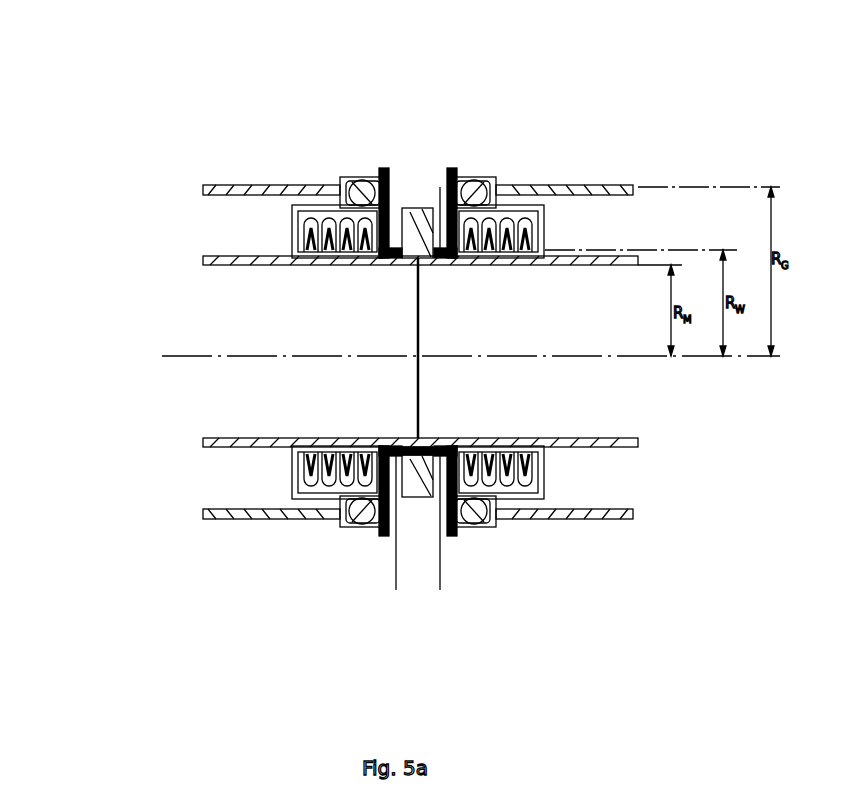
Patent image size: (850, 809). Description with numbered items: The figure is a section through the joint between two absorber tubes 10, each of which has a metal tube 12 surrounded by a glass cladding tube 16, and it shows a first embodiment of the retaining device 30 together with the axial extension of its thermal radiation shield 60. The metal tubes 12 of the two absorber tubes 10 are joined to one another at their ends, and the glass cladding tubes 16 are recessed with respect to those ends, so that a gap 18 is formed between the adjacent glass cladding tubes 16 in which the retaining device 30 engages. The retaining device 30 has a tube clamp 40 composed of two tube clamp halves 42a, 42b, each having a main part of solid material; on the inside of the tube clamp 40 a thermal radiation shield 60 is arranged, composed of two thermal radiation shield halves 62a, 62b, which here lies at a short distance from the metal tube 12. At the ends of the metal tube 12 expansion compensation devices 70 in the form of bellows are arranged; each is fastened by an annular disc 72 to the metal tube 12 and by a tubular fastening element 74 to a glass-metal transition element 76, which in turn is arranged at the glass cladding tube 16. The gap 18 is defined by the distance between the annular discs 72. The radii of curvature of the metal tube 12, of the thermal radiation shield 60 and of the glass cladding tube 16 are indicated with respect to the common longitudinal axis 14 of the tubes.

The absorber tube 10 is at (228, 121).
The metal tube 12 is at (242, 255).
The axis of rotation 14 is at (430, 337).
The glass cladding tube 16 is at (220, 183).
The gap 18 is at (437, 182).
The retaining device 30 is at (414, 595).
The tube clamp 40 is at (414, 82).
The tube clamp half 42a is at (412, 208).
The tube clamp half 42b is at (397, 548).
The thermal radiation shield 60 is at (487, 359).
The thermal radiation shield half 62a is at (440, 187).
The thermal radiation shield half 62b is at (440, 530).
The expansion compensation device 70 is at (325, 266).
The annular disc 72 is at (378, 262).
The tubular fastening element 74 is at (376, 294).
The glass-metal transition element 76 is at (345, 180).